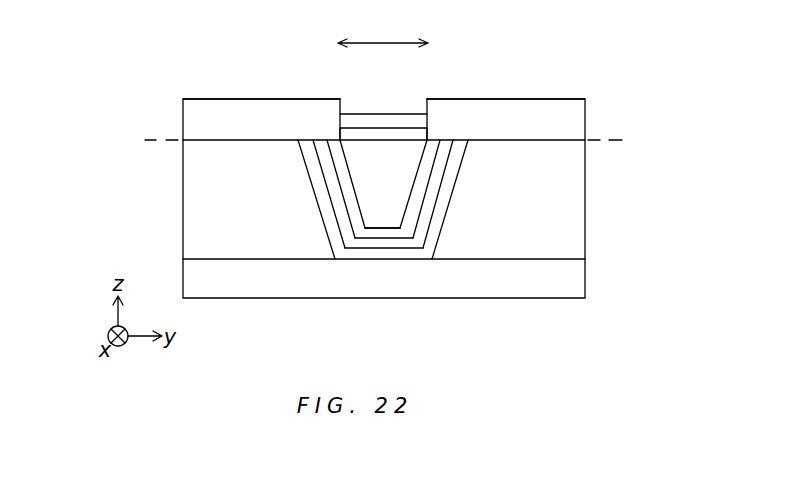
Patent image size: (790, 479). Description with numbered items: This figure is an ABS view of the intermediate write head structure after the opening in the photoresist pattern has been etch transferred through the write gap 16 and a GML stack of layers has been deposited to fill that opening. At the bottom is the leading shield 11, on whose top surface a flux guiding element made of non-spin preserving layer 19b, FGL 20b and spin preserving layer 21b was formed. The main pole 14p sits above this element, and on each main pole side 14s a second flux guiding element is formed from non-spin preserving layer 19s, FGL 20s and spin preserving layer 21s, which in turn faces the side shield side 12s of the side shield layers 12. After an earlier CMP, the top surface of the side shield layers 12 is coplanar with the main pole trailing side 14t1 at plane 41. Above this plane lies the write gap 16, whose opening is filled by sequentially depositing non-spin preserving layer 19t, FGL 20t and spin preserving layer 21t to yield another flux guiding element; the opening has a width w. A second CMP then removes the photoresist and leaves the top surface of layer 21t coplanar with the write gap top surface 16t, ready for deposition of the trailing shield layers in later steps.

The leading shield 11 is at (570, 275).
The side shield layers 12 is at (200, 244).
The side shield side 12s is at (319, 207).
The main pole 14p is at (372, 205).
The main pole side 14s is at (410, 195).
The main pole trailing side 14t1 is at (363, 138).
The write gap 16 is at (198, 114).
The write gap top surface 16t is at (231, 99).
The non-spin preserving layer 19s is at (307, 152).
The non-spin preserving layer 19b is at (368, 252).
The non-spin preserving layer 19t is at (378, 105).
The flux guiding layer 20s is at (323, 163).
The flux guiding layer 20b is at (388, 242).
The flux guiding layer 20t is at (410, 122).
The spin preserving layer 21s is at (345, 180).
The spin preserving layer 21b is at (394, 232).
The spin preserving layer 21t is at (352, 135).
The plane 41- 41 is at (385, 143).
The width of plug opening w is at (383, 33).